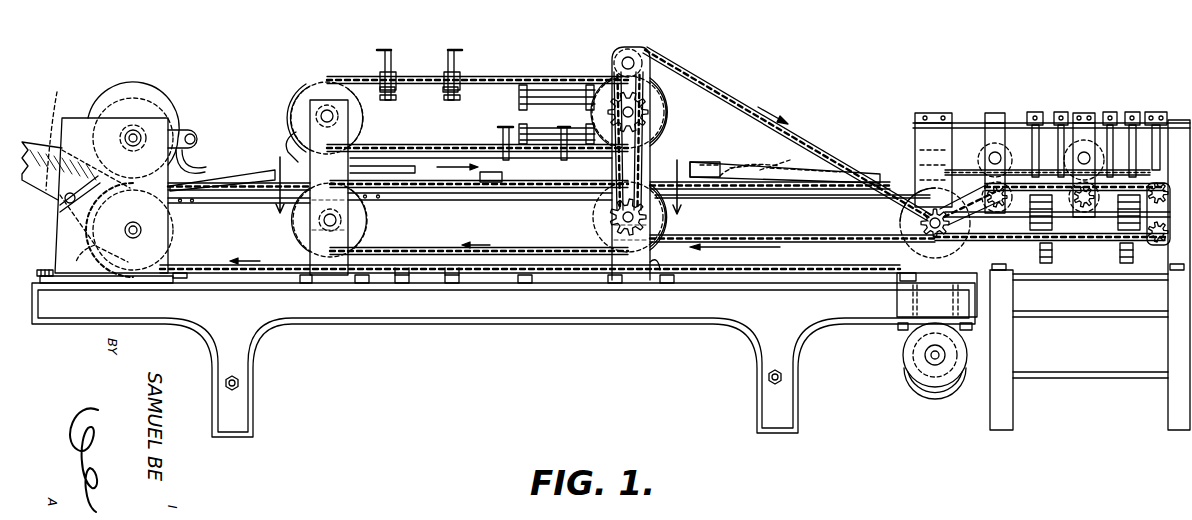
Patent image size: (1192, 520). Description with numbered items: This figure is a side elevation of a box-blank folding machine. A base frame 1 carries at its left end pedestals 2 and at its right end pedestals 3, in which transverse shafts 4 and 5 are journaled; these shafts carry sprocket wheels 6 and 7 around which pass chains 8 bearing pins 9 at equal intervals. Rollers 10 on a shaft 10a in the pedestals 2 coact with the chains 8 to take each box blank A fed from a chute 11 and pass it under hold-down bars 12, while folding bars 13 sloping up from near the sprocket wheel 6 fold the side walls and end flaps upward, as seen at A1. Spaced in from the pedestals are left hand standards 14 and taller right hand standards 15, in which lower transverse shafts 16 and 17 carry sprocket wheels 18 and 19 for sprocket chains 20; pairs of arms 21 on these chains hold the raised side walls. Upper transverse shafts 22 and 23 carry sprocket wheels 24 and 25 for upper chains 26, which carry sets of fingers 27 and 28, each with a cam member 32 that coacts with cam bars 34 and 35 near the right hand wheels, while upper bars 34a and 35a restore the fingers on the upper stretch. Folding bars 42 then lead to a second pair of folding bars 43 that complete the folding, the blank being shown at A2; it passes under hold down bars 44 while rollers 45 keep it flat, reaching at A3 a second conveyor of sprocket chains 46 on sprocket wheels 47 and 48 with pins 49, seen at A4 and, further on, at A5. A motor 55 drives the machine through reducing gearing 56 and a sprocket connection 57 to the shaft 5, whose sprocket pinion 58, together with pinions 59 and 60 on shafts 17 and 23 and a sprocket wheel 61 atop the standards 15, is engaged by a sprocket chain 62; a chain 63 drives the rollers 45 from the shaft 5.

The base frame 1 is at (392, 338).
The pedestals 2 is at (88, 118).
The pedestals 3 is at (915, 160).
The transverse shaft 4 is at (136, 236).
The transverse shaft 5 is at (900, 236).
The sprocket wheels 6 is at (101, 230).
The sprocket wheels 7 is at (898, 218).
The chains 8 is at (236, 206).
The pins 9 is at (256, 170).
The rollers 10 is at (148, 102).
The shaft 10a is at (140, 134).
The chute 11 is at (34, 140).
The hold-down bars 12 is at (197, 148).
The folding bars 13 is at (250, 173).
The left hand standards 14 is at (322, 100).
The right hand standards 15 is at (648, 52).
The lower transverse shaft 16 is at (336, 220).
The lower transverse shaft 17 is at (610, 226).
The sprocket wheels 18 is at (298, 240).
The sprocket wheels 19 is at (604, 208).
The sprocket chains 20 is at (450, 195).
The arms 21 is at (296, 186).
The upper transverse shaft 22 is at (333, 116).
The upper transverse shaft 23 is at (648, 114).
The sprocket wheels 24 is at (300, 92).
The sprocket wheels 25 is at (662, 135).
The upper chains 26 is at (490, 77).
The finger 27 is at (296, 115).
The finger 28 is at (387, 50).
The cam member 32 is at (396, 92).
The cam bar 34 is at (560, 140).
The upper bar 34a is at (540, 88).
The cam bar 35 is at (530, 140).
The upper bar 35a is at (560, 92).
The folding bars 42 is at (555, 200).
The folding bars 43 is at (728, 162).
The hold down bars 44 is at (810, 170).
The rollers 45 is at (972, 170).
The sprocket chains 46 is at (1030, 175).
The sprocket wheels 47 is at (1050, 268).
The sprocket wheels 48 is at (1122, 268).
The pins 49 is at (1042, 266).
The motor 55 is at (905, 355).
The reducing gearing 56 is at (906, 378).
The sprocket connection 57 is at (912, 300).
The sprocket pinion 58 is at (905, 243).
The sprocket pinion 59 is at (660, 250).
The sprocket pinion 60 is at (655, 104).
The sprocket wheel 61 is at (628, 56).
The sprocket chain 62 is at (705, 88).
The chain 63 is at (1068, 240).
The box blank A is at (55, 125).
The blank A1 is at (262, 152).
The blank A2 is at (775, 152).
The blank A3 is at (933, 160).
The blank A4 is at (1108, 170).
The blank A5 is at (498, 196).